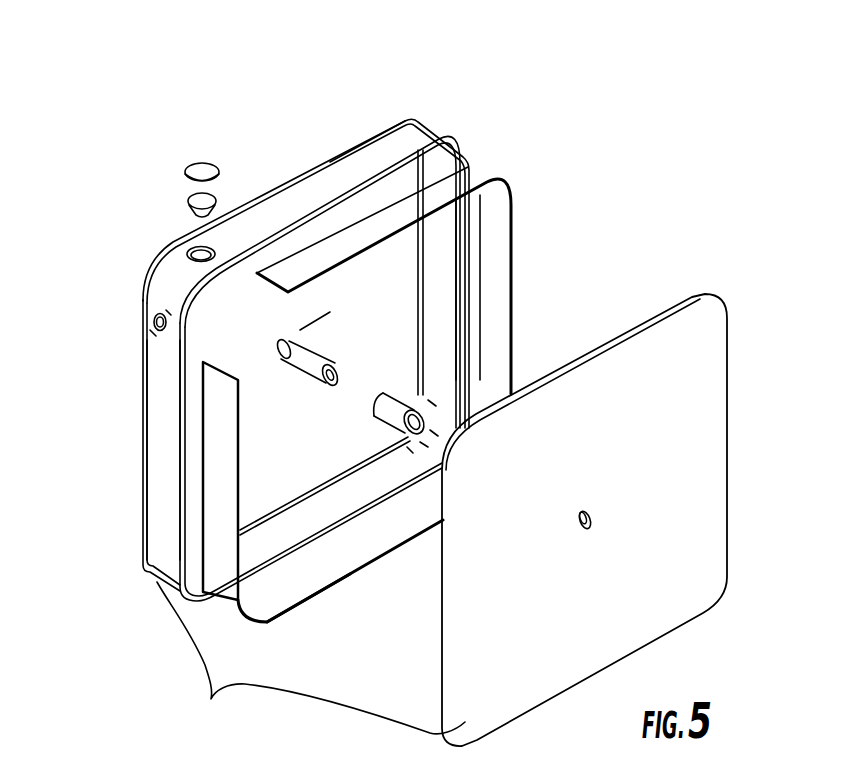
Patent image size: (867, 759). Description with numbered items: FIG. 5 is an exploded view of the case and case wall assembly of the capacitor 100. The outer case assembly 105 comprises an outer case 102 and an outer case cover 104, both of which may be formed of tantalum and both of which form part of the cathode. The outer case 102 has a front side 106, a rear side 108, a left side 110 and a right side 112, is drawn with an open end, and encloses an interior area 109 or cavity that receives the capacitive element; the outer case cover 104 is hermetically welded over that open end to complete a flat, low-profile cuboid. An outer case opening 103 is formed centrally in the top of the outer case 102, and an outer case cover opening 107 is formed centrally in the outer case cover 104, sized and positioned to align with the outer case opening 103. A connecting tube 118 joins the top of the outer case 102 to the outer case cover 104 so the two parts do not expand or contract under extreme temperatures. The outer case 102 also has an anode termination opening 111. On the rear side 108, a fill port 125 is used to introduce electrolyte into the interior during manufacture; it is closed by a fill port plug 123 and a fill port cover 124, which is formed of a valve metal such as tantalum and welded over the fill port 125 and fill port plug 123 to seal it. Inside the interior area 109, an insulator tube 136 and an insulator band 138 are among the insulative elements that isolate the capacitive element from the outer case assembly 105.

The capacitor 100 is at (222, 82).
The outer case 102 is at (290, 209).
The outer case opening 103 is at (275, 347).
The outer case cover 104 is at (630, 378).
The outer case assembly 105 is at (311, 660).
The front side 106 is at (295, 529).
The outer case cover opening 107 is at (589, 524).
The rear side 108 is at (363, 158).
The interior area 109 is at (210, 358).
The left side 110 is at (160, 455).
The anode termination opening 111 is at (157, 326).
The right side 112 is at (342, 350).
The connecting tube 118 is at (453, 322).
The fill port plug 123 is at (215, 201).
The fill port cover 124 is at (195, 160).
The fill port 125 is at (190, 247).
The insulator tube 136 is at (430, 405).
The insulator band 138 is at (462, 183).